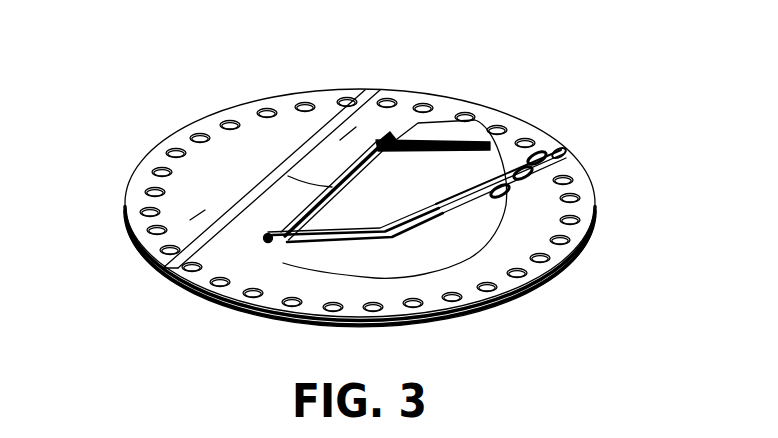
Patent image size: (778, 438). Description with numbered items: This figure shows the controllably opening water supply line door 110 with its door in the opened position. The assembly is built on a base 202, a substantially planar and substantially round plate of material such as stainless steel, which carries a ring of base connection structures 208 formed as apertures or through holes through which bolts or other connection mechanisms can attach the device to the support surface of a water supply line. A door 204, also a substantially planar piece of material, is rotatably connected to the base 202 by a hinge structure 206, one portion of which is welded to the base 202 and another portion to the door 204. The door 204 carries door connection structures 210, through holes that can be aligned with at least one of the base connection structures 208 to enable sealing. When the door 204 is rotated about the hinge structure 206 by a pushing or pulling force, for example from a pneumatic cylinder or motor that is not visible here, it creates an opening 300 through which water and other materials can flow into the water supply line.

The controllably opening water supply line door 110 is at (530, 62).
The base 202 is at (593, 207).
The door 204 is at (558, 151).
The hinge structure 206 is at (335, 187).
The base connection structures 208 is at (134, 212).
The door connection structures 210 is at (512, 177).
The opening 300 is at (463, 230).